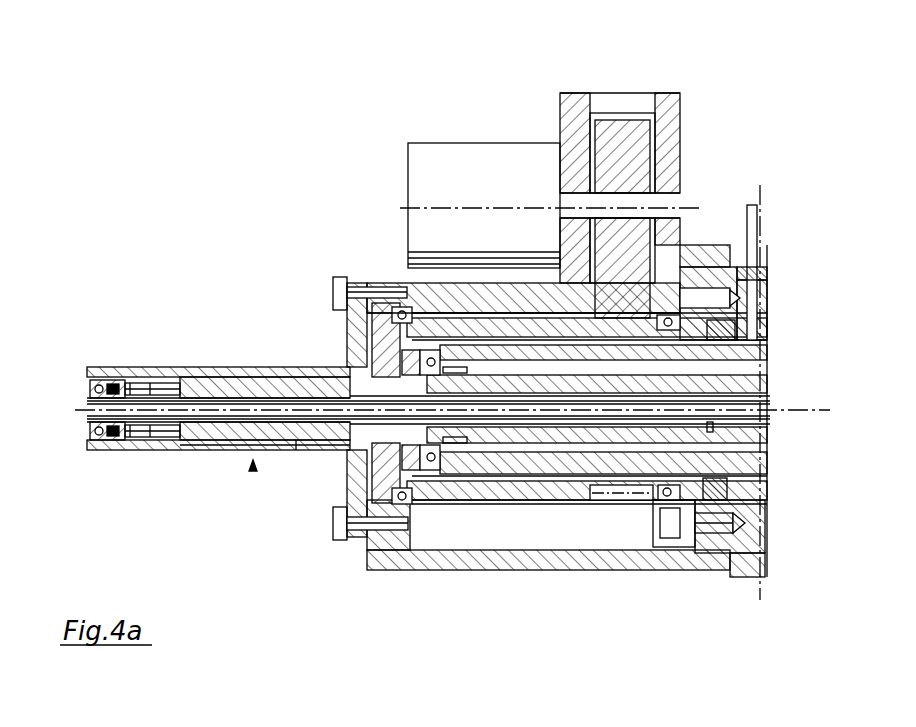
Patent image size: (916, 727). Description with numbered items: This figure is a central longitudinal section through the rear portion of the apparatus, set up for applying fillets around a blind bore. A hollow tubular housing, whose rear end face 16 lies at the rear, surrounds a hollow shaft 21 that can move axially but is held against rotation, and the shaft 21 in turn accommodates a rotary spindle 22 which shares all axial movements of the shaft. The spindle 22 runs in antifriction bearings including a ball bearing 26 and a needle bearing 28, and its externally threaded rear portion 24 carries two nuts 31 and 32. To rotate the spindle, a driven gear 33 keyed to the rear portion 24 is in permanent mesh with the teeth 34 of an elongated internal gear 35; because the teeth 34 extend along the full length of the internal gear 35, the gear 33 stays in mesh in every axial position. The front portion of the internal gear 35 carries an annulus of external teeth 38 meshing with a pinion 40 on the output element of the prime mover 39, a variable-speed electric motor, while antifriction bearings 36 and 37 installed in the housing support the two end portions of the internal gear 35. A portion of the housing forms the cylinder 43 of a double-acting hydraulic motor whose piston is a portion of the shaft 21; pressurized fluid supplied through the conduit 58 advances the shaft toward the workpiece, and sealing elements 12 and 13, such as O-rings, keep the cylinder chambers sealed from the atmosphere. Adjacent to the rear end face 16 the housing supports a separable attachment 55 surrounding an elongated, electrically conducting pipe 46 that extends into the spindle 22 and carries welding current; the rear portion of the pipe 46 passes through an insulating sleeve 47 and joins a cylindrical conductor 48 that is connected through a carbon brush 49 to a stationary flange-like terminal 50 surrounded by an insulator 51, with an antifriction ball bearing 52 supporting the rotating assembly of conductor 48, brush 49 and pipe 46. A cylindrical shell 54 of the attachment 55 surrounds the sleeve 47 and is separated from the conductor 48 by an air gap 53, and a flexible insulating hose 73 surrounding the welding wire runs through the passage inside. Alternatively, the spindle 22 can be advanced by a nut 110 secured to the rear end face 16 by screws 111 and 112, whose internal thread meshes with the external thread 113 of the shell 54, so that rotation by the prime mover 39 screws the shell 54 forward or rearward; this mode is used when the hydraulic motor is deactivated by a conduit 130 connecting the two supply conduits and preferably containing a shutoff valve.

The sealing element 12 is at (708, 500).
The sealing element 13 is at (727, 493).
The rear end face 16 is at (380, 283).
The hollow shaft 21 is at (763, 347).
The rotary spindle 22 is at (767, 373).
The rear portion of the spindle 24 is at (357, 507).
The ball bearing 26 is at (435, 443).
The needle bearing 28 is at (458, 450).
The nut 31 is at (398, 463).
The nut 32 is at (412, 460).
The driven gear 33 is at (395, 305).
The teeth of the internal gear 34 is at (447, 283).
The elongated internal gear 35 is at (493, 312).
The antifriction bearing 36 is at (392, 515).
The antifriction bearing 37 is at (652, 500).
The external teeth 38 is at (612, 498).
The prime mover 39 is at (527, 155).
The pinion 40 is at (648, 300).
The cylinder 43 is at (750, 235).
The elongated pipe 46 is at (306, 367).
The sleeve 47 is at (258, 367).
The cylindrical conductor 48 is at (165, 367).
The carbon brush 49 is at (142, 367).
The flange-like terminal 50 is at (105, 367).
The insulator 51 is at (92, 450).
The antifriction ball bearing 52 is at (108, 450).
The air gap 53 is at (145, 450).
The cylindrical shell 54 is at (210, 450).
The separable attachment 55 is at (252, 471).
The supply conduit 58 is at (775, 262).
The flexible hose 73 is at (767, 400).
The nut 110 is at (372, 286).
The screw 111 is at (338, 278).
The screw 112 is at (333, 525).
The external thread 113 is at (296, 450).
The conduit 130 is at (762, 203).